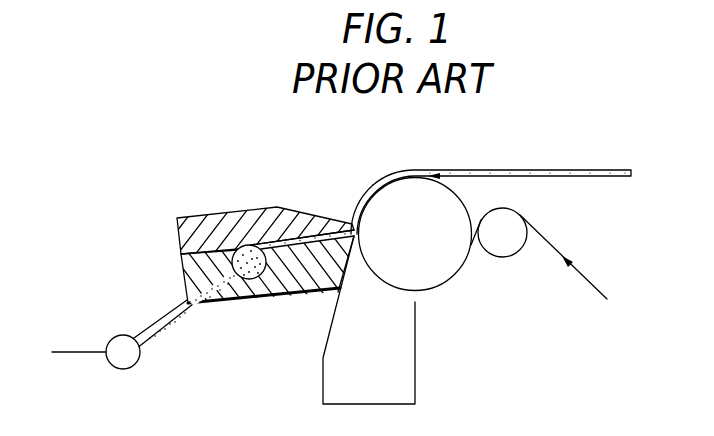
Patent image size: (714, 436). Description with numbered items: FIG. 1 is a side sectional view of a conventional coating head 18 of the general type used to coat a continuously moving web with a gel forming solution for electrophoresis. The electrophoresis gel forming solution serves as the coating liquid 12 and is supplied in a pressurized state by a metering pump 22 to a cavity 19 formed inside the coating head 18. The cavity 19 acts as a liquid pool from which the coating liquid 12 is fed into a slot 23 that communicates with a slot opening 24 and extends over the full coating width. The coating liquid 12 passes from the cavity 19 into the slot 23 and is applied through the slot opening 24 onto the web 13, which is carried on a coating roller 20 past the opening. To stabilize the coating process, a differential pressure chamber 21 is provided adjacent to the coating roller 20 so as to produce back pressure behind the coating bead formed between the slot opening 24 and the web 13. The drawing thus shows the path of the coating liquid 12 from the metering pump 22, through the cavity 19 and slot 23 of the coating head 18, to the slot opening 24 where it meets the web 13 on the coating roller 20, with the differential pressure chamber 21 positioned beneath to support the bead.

The coating liquid 12 is at (153, 325).
The web 13 is at (503, 168).
The coating head 18 is at (268, 212).
The cavity 19 is at (232, 265).
The coating roller 20 is at (451, 272).
The differential pressure chamber 21 is at (405, 346).
The metering pump 22 is at (142, 359).
The slot 23 is at (303, 230).
The slot opening 24 is at (350, 225).